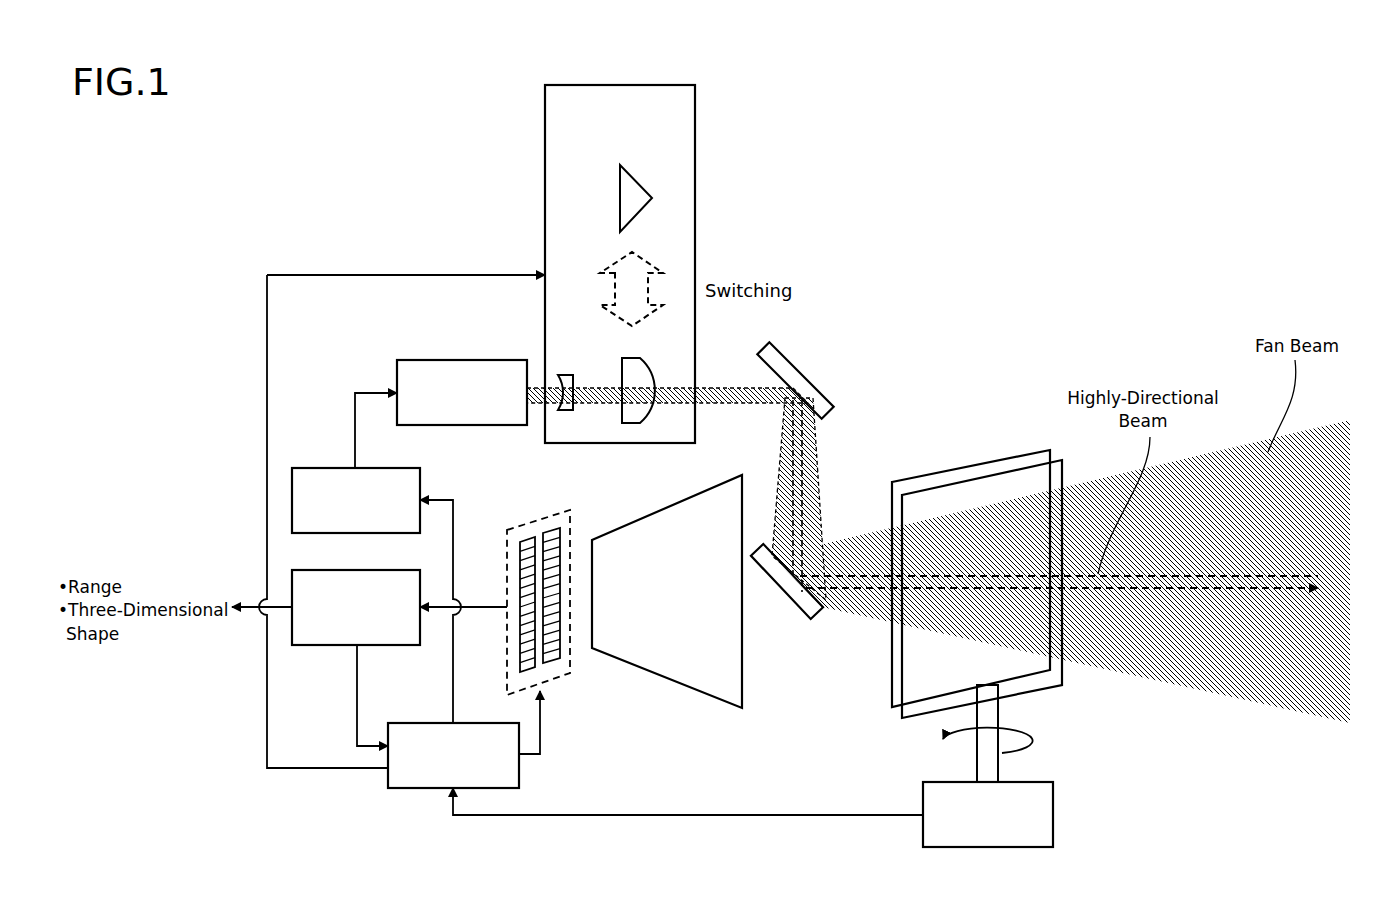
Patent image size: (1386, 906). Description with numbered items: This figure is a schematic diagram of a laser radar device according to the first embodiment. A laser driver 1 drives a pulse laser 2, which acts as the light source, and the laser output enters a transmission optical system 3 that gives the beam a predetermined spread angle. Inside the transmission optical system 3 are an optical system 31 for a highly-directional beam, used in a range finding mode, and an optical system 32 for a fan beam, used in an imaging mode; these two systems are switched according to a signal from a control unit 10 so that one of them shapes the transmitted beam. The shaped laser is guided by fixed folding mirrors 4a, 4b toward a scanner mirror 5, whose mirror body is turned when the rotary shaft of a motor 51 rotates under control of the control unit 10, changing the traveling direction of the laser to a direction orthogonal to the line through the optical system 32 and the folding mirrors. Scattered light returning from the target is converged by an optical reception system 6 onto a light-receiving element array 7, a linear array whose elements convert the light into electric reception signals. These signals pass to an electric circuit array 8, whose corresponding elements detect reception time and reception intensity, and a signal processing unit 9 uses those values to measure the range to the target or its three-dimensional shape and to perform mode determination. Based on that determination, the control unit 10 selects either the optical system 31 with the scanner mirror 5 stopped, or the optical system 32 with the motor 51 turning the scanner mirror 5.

The laser driver 1 is at (390, 468).
The pulse laser 2 is at (497, 360).
The transmission optical system 3 is at (640, 85).
The optical system for highly-directional beam 31 is at (655, 376).
The optical system for fan beam 32 is at (650, 183).
The folding mirror 4a is at (798, 381).
The folding mirror 4b is at (780, 592).
The scanner mirror 5 is at (990, 492).
The optical reception system 6 is at (656, 512).
The light-receiving element array 7 is at (552, 533).
The electric circuit array 8 is at (527, 541).
The signal processing unit 9 is at (386, 570).
The control unit 10 is at (400, 723).
The motor 51 is at (1030, 782).